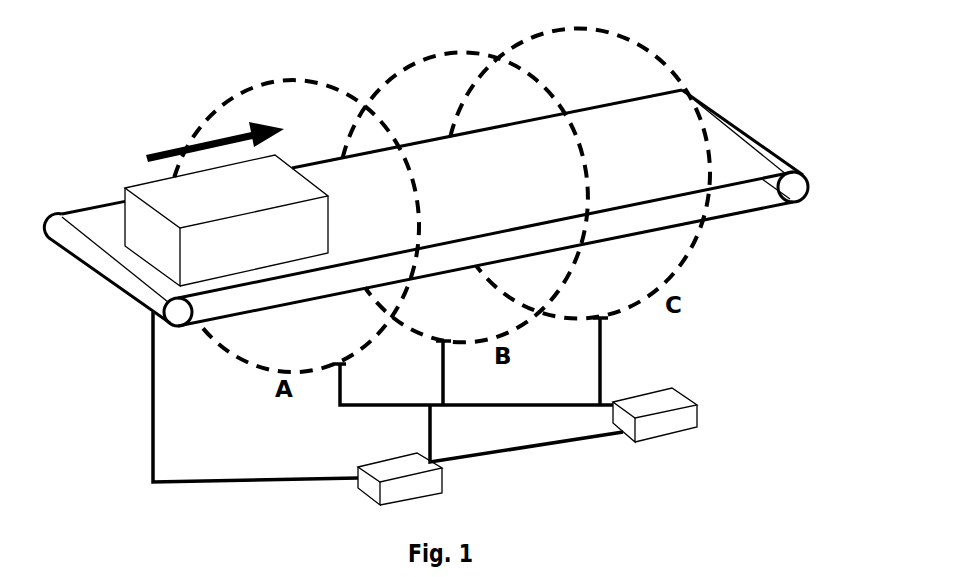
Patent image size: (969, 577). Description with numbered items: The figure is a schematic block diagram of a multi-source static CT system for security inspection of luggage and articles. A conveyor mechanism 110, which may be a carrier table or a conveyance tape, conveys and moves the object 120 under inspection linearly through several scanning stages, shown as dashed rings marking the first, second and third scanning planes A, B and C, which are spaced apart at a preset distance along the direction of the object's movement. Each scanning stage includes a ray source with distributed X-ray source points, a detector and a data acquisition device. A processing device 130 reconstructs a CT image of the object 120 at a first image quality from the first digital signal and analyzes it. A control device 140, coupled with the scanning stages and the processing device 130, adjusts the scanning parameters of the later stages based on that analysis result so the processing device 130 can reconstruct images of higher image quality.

The conveyor mechanism 110 is at (725, 119).
The object under inspection 120 is at (153, 197).
The processing device 130 is at (677, 393).
The control device 140 is at (393, 465).